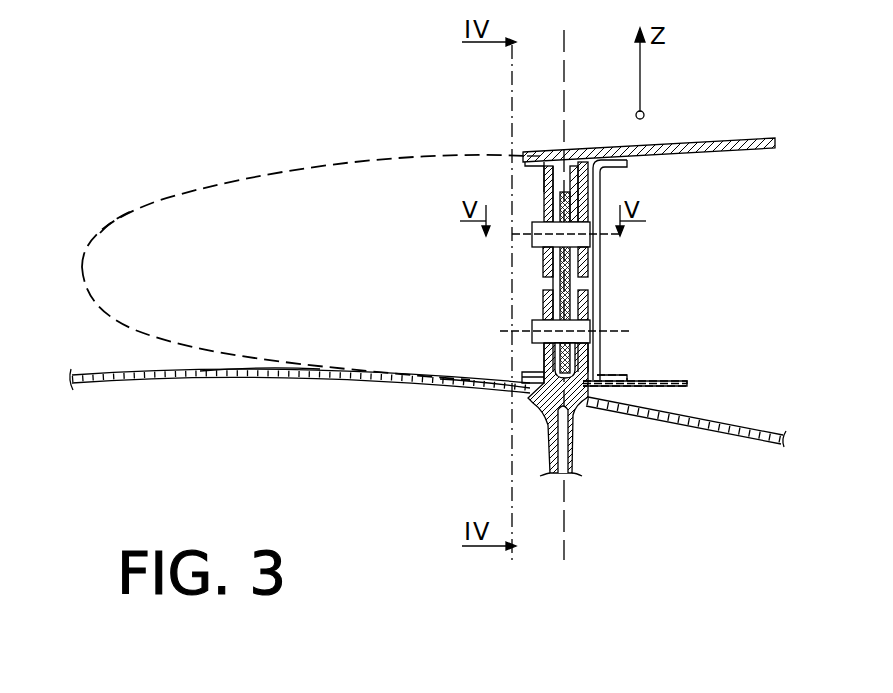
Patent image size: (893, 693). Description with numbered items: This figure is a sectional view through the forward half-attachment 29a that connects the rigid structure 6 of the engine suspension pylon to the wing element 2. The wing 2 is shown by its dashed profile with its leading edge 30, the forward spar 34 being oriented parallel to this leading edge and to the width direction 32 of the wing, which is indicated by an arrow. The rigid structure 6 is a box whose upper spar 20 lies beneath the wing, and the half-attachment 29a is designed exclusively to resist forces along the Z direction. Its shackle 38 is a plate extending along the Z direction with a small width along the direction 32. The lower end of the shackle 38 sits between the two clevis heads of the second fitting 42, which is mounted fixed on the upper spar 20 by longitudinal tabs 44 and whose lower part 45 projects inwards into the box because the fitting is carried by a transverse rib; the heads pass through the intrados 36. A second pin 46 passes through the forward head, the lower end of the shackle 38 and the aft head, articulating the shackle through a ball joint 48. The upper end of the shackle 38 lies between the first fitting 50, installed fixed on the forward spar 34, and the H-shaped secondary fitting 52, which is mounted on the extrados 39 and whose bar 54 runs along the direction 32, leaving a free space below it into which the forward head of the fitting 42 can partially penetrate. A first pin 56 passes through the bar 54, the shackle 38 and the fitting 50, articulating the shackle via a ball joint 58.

The wing element 2 is at (126, 205).
The rigid structure 6 is at (240, 390).
The upper spar 20 is at (115, 368).
The forward half-attachment 29a is at (500, 175).
The leading edge 30 is at (192, 190).
The width direction 32 is at (645, 112).
The forward spar 34 is at (604, 172).
The intrados 36 is at (688, 386).
The shackle 38 is at (596, 290).
The extrados 39 is at (722, 141).
The second fitting 42 is at (530, 366).
The longitudinal tabs 44 is at (482, 395).
The lower part 45 is at (578, 465).
The second pin 46 is at (594, 330).
The ball joint 48 is at (545, 312).
The first fitting 50 is at (592, 186).
The secondary fitting 52 is at (538, 174).
The bar 54 is at (540, 258).
The first pin 56 is at (540, 228).
The ball joint 58 is at (594, 247).